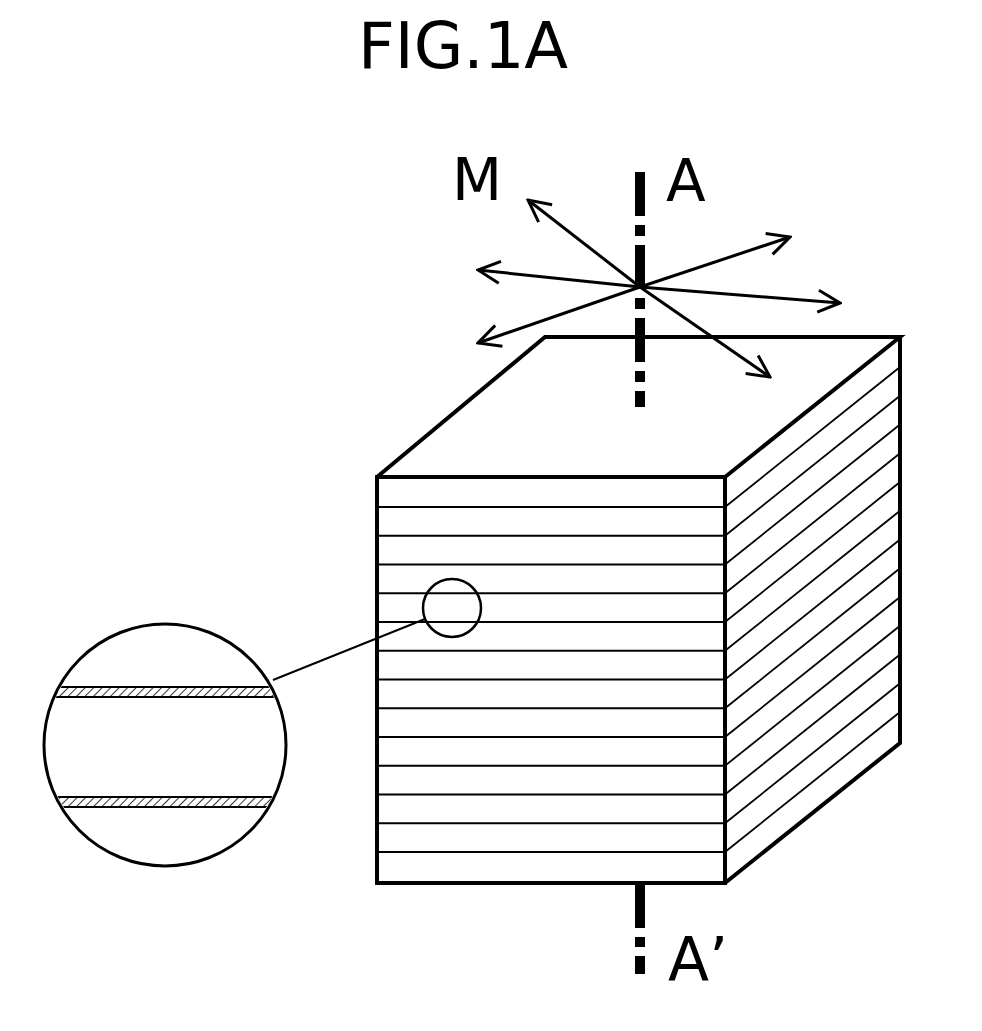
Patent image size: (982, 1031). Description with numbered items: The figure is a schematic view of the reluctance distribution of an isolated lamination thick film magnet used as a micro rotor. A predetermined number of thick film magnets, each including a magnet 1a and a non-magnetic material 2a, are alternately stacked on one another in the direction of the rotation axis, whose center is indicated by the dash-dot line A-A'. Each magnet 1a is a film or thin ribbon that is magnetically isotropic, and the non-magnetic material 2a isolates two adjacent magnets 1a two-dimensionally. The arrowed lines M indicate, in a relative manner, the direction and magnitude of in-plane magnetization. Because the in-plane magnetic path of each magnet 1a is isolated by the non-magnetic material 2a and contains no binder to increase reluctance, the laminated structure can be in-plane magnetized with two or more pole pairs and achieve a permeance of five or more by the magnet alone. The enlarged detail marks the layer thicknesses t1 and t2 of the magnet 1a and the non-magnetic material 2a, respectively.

The magnet 1a is at (375, 490).
The non-magnetic material 2a is at (375, 510).
The thickness of magnetic layer 1a t1 is at (183, 698).
The thickness of layer 2a t2 is at (135, 686).